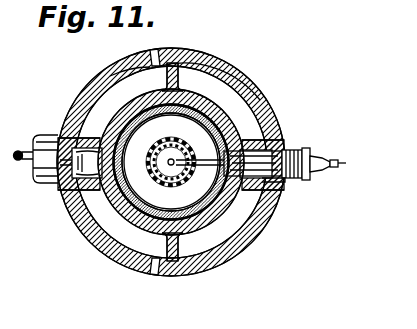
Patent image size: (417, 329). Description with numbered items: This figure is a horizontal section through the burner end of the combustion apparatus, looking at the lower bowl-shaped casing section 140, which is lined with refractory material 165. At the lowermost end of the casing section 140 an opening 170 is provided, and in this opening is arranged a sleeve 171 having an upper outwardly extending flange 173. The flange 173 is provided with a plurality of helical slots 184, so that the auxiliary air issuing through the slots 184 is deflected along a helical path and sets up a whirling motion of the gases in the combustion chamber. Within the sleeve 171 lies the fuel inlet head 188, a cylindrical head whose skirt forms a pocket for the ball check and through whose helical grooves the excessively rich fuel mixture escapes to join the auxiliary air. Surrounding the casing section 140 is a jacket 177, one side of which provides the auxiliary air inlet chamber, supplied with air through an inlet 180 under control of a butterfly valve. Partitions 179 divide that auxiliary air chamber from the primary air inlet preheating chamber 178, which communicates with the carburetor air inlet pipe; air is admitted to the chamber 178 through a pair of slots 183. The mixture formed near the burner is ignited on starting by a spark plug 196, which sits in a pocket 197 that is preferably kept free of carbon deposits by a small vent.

The lower bowl-shaped casing section 140 is at (255, 265).
The refractory material 165 is at (214, 110).
The opening 170 is at (174, 184).
The sleeve 171 is at (176, 149).
The upper outwardly extending flange 173 is at (128, 200).
The jacket 177 is at (112, 70).
The primary air inlet preheating chamber 178 is at (72, 146).
The partitions 179 is at (205, 59).
The inlet 180 is at (252, 152).
The slots 183 is at (156, 52).
The helical slots 184 is at (148, 148).
The fuel inlet head 188 is at (142, 208).
The spark plug 196 is at (346, 165).
The pocket 197 is at (284, 182).